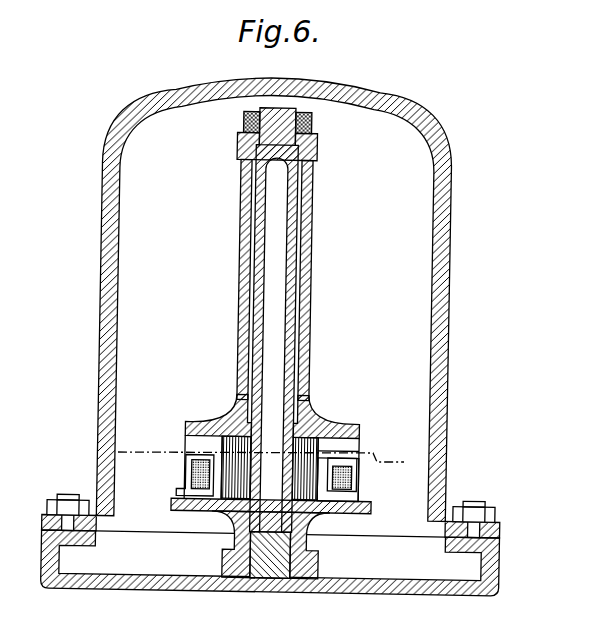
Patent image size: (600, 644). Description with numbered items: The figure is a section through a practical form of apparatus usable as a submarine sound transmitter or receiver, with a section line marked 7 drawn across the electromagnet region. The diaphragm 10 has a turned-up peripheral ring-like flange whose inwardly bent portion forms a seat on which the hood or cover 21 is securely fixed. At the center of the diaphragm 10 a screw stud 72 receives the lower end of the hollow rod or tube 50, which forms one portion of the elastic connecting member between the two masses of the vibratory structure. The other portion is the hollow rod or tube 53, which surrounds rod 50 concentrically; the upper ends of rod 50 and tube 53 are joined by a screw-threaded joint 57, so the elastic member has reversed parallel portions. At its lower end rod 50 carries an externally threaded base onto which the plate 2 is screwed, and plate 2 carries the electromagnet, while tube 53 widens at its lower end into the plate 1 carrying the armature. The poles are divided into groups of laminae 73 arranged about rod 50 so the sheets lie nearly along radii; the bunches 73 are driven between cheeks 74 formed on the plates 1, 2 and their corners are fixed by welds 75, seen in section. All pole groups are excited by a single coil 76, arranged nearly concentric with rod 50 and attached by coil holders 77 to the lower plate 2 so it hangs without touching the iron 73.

The plate 1 is at (318, 419).
The plate 2 is at (324, 522).
The section line 7- 7 is at (268, 465).
The diaphragm 10 is at (429, 584).
The hood or cover 21 is at (441, 329).
The hollow rod or tube 50 is at (255, 282).
The hollow rod or tube 53 is at (310, 268).
The screw-threaded joint 57 is at (236, 128).
The screw stud 72 is at (277, 580).
The groups of laminae 73 is at (362, 445).
The cheeks 74 is at (222, 443).
The welds 75 is at (370, 436).
The coil 76 is at (198, 473).
The coil holders 77 is at (189, 484).